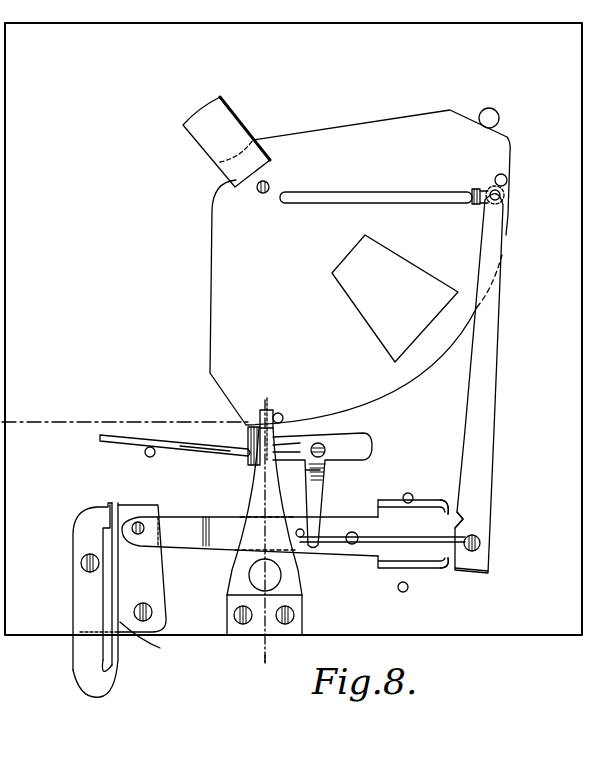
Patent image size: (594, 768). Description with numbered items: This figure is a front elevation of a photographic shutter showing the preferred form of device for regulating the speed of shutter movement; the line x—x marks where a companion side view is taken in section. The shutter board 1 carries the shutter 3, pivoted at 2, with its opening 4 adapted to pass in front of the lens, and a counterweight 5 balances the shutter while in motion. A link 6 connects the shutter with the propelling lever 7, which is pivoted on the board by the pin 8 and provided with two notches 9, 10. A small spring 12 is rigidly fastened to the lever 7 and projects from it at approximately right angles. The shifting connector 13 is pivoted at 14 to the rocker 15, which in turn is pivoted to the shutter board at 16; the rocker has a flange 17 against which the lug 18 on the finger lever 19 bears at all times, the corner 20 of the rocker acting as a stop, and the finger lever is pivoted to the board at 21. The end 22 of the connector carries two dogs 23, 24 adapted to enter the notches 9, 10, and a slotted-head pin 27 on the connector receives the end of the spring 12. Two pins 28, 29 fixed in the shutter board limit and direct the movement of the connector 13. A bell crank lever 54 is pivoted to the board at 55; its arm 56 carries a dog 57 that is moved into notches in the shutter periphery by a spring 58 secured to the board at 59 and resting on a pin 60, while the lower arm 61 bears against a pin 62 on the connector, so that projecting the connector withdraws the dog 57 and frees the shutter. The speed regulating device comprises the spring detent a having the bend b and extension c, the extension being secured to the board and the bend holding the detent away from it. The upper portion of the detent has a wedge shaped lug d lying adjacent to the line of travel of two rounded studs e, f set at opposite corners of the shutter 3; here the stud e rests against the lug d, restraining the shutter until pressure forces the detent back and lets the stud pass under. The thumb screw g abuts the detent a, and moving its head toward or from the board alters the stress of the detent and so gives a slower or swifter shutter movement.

The shutter board 1 is at (293, 329).
The pivot 2 is at (258, 191).
The shutter 3 is at (360, 266).
The opening 4 is at (398, 257).
The counterweight 5 is at (226, 142).
The link 6 is at (384, 187).
The propelling lever 7 is at (479, 383).
The pin 8 is at (473, 533).
The notch 9 is at (463, 517).
The notch 10 is at (458, 572).
The small spring 12 is at (398, 532).
The shifting connector 13 is at (250, 536).
The pivot 14 is at (150, 522).
The rocker 15 is at (142, 568).
The pivot 16 is at (144, 603).
The flange 17 is at (151, 643).
The lug 18 is at (108, 520).
The finger lever 19 is at (95, 600).
The corner 20 is at (118, 625).
The pivot 21 is at (90, 573).
The end 22 is at (382, 546).
The dog 23 is at (443, 499).
The dog 24 is at (445, 572).
The pin 27 is at (355, 543).
The pin 28 is at (406, 489).
The pin 29 is at (402, 597).
The bell crank lever 54 is at (322, 490).
The pivot 55 is at (317, 461).
The arm 56 is at (286, 447).
The dog 57 is at (246, 444).
The spring 58 is at (200, 452).
The securing point 59 is at (100, 438).
The pin 60 is at (150, 457).
The lower arm 61 is at (318, 500).
The pin 62 is at (300, 528).
The spring detent a is at (272, 487).
The bend b is at (302, 597).
The extension c is at (282, 623).
The wedge shaped lug d is at (266, 424).
The stud e is at (283, 416).
The stud f is at (496, 175).
The thumb screw g is at (265, 575).
The section line x is at (261, 666).